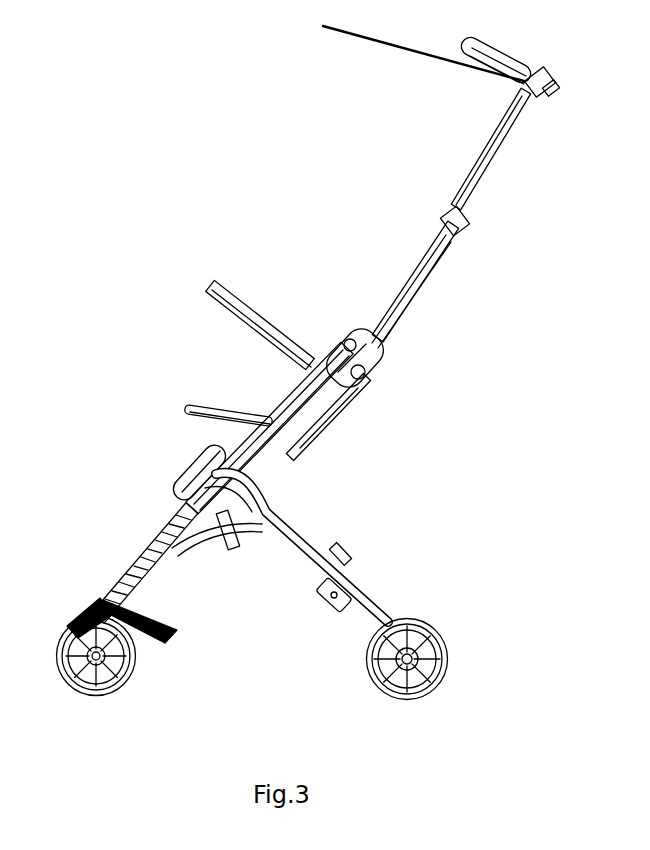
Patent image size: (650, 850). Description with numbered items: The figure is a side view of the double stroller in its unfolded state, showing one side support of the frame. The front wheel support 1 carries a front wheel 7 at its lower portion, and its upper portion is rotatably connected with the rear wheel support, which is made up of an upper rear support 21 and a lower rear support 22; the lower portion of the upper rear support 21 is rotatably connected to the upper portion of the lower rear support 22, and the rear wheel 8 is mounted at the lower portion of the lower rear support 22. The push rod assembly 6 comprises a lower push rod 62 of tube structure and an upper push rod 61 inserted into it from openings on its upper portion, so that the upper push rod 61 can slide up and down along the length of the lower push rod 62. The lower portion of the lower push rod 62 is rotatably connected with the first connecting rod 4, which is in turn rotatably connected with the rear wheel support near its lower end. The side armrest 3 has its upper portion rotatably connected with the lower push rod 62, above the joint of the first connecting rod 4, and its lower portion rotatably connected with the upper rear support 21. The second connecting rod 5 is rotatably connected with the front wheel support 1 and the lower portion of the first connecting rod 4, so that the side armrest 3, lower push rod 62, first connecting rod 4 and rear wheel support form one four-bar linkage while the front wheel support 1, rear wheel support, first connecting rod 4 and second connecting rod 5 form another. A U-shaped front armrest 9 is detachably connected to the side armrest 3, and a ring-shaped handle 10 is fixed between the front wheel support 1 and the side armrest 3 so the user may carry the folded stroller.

The front wheel support 1 is at (103, 587).
The side armrest 3 is at (283, 410).
The first connecting rod 4 is at (320, 440).
The second connecting rod 5 is at (200, 553).
The push rod assembly 6 is at (460, 218).
The upper push rod 61 is at (465, 210).
The lower push rod 62 is at (445, 258).
The front wheel 7 is at (160, 715).
The rear wheel 8 is at (428, 692).
The front armrest 9 is at (222, 283).
The handle 10 is at (185, 462).
The upper rear support 21 is at (360, 525).
The lower rear support 22 is at (360, 603).